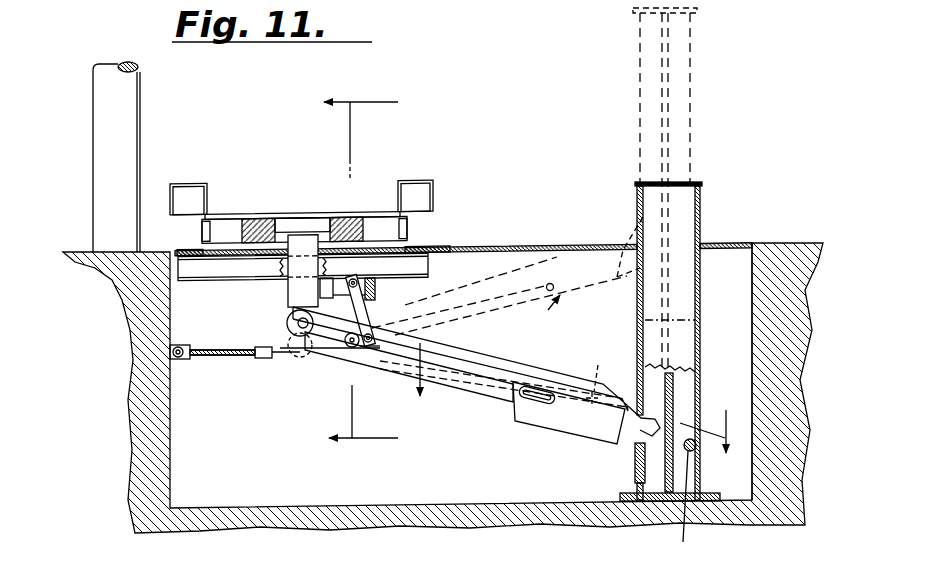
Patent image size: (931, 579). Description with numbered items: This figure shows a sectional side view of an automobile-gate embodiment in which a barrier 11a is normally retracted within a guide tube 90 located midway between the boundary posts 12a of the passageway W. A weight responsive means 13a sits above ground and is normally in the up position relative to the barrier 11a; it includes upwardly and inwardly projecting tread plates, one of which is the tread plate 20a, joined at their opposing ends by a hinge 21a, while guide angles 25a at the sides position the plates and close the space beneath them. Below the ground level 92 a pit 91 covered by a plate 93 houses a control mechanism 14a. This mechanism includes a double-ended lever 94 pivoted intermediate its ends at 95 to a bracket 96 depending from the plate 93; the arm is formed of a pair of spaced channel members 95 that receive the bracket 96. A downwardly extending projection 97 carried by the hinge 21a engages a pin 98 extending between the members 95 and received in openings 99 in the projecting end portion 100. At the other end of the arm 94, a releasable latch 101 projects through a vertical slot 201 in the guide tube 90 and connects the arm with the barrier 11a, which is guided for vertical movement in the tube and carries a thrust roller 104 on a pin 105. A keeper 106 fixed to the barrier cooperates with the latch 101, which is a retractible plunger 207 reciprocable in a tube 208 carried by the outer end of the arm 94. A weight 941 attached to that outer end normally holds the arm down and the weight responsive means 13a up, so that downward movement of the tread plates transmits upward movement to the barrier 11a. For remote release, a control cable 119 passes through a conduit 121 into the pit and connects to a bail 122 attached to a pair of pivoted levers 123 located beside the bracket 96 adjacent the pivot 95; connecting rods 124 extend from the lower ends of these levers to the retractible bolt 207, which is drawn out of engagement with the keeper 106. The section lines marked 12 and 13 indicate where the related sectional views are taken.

The barrier 11a is at (690, 147).
The boundary posts 12a is at (130, 107).
The passageway W is at (158, 138).
The weight responsive means 13a is at (430, 176).
The tread plate 20a is at (242, 213).
The hinge 21a is at (340, 211).
The guide angles 25a is at (200, 246).
The plate 93 is at (505, 248).
The guide tube 90 is at (702, 205).
The pit 91 is at (168, 378).
The ground level 92 is at (792, 242).
The double-ended lever 94 is at (487, 403).
The channel members 95 is at (345, 350).
The bracket 96 is at (372, 300).
The projection 97 is at (287, 292).
The pin 98 is at (290, 325).
The openings 99 is at (290, 352).
The projecting end portion 100 is at (305, 362).
The releasable latch 101 is at (630, 445).
The thrust roller 104 is at (700, 452).
The pin 105 is at (670, 507).
The keeper 106 is at (648, 416).
The control cable 119 is at (212, 358).
The conduit 121 is at (172, 352).
The bail 122 is at (359, 356).
The pivoted levers 123 is at (377, 313).
The connecting rods 124 is at (507, 407).
The control mechanism 14a is at (520, 362).
The vertical slot 201 is at (642, 345).
The retractible plunger 207 is at (622, 250).
The tube 208 is at (541, 380).
The weight 941 is at (587, 430).
The section line 12 is at (384, 270).
The section line 13 is at (585, 398).